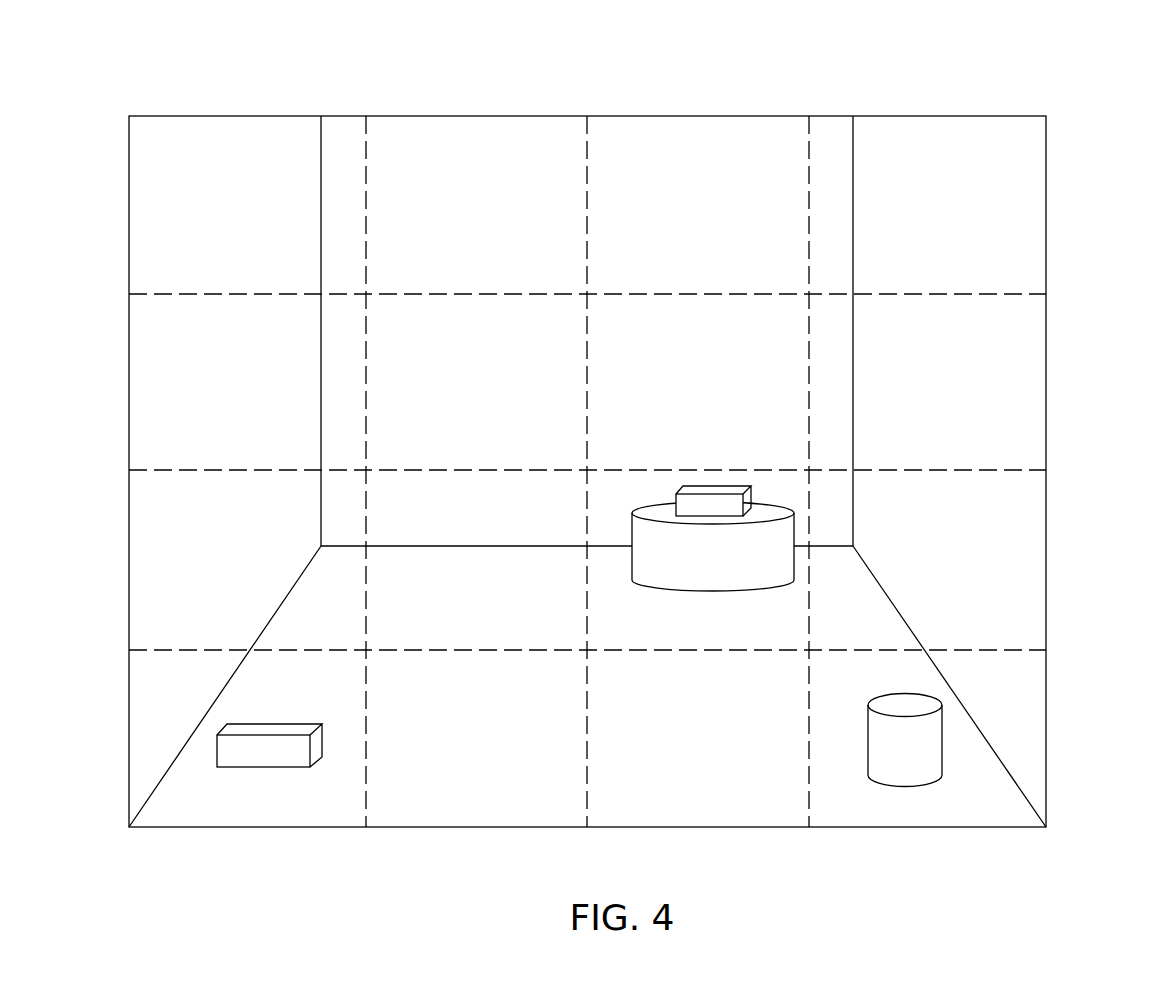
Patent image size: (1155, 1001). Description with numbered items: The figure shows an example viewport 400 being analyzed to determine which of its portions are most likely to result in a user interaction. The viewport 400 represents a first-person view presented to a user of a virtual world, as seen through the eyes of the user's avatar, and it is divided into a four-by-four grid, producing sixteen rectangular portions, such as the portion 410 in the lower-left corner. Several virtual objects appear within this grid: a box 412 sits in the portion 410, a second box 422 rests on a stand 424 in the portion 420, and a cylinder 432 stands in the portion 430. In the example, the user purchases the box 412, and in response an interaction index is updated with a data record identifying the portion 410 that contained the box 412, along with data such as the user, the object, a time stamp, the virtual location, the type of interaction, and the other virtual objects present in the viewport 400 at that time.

The viewport 400 is at (951, 99).
The portion 410 is at (265, 803).
The box 412 is at (217, 752).
The portion 420 is at (770, 622).
The second box 422 is at (718, 487).
The stand 424 is at (795, 528).
The portion 430 is at (910, 808).
The cylinder 432 is at (942, 747).